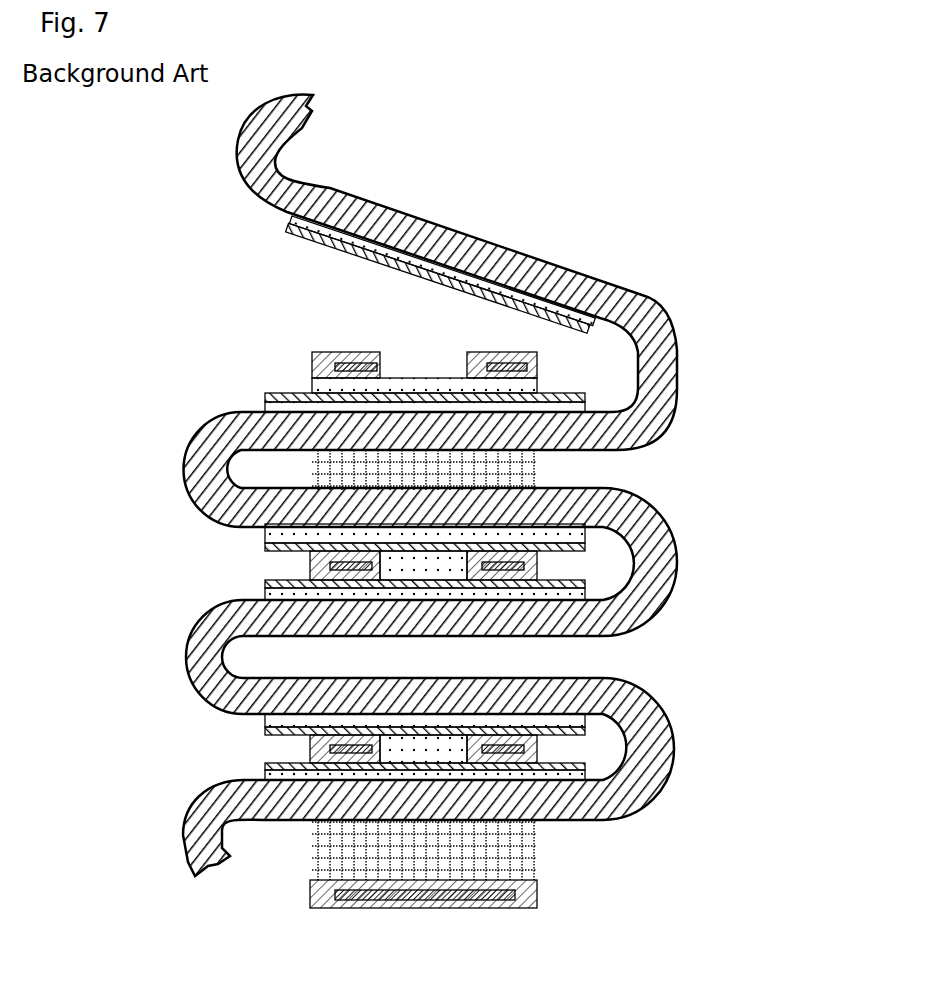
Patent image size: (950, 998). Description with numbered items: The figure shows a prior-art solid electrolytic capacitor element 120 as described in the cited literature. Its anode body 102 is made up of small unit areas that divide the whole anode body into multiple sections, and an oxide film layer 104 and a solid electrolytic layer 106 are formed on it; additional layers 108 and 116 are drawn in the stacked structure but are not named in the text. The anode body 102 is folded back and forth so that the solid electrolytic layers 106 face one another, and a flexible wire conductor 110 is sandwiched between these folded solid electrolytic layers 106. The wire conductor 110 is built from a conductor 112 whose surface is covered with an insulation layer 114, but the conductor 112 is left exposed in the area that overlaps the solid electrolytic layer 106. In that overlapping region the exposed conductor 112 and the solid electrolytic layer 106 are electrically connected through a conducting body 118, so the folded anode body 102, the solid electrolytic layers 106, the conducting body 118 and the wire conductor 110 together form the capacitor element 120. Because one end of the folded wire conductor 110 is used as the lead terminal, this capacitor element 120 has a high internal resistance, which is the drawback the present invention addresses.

The anode body 102 is at (677, 565).
The oxide film layer 104 is at (277, 414).
The solid electrolytic layer 106 is at (300, 396).
The adhesive layer 108 is at (548, 405).
The wire conductor 110 is at (310, 565).
The conductor 112 is at (480, 366).
The insulation layer 114 is at (318, 352).
The bonding layer 116 is at (385, 377).
The conducting body 118 is at (400, 575).
The capacitor element 120 is at (258, 866).